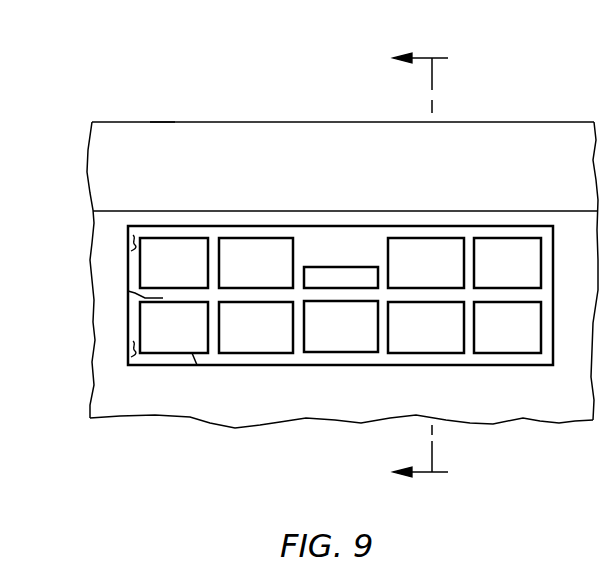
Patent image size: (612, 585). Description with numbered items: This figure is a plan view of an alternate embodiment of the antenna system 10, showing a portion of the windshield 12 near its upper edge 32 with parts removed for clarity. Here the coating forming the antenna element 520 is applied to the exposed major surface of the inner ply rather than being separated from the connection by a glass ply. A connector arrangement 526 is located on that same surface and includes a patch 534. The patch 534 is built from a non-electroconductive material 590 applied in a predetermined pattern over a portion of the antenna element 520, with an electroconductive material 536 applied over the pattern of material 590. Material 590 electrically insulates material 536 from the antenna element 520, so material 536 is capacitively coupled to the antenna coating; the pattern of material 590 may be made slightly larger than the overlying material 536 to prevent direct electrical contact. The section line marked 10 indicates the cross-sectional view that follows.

The windshield 12 is at (87, 172).
The upper edge 32 is at (150, 122).
The connector arrangement 526 is at (442, 143).
The antenna element 520 is at (120, 211).
The patch 534 is at (506, 365).
The electroconductive material 536 is at (128, 237).
The non-electroconductive material 590 is at (128, 347).
The antenna system 10 is at (401, 266).